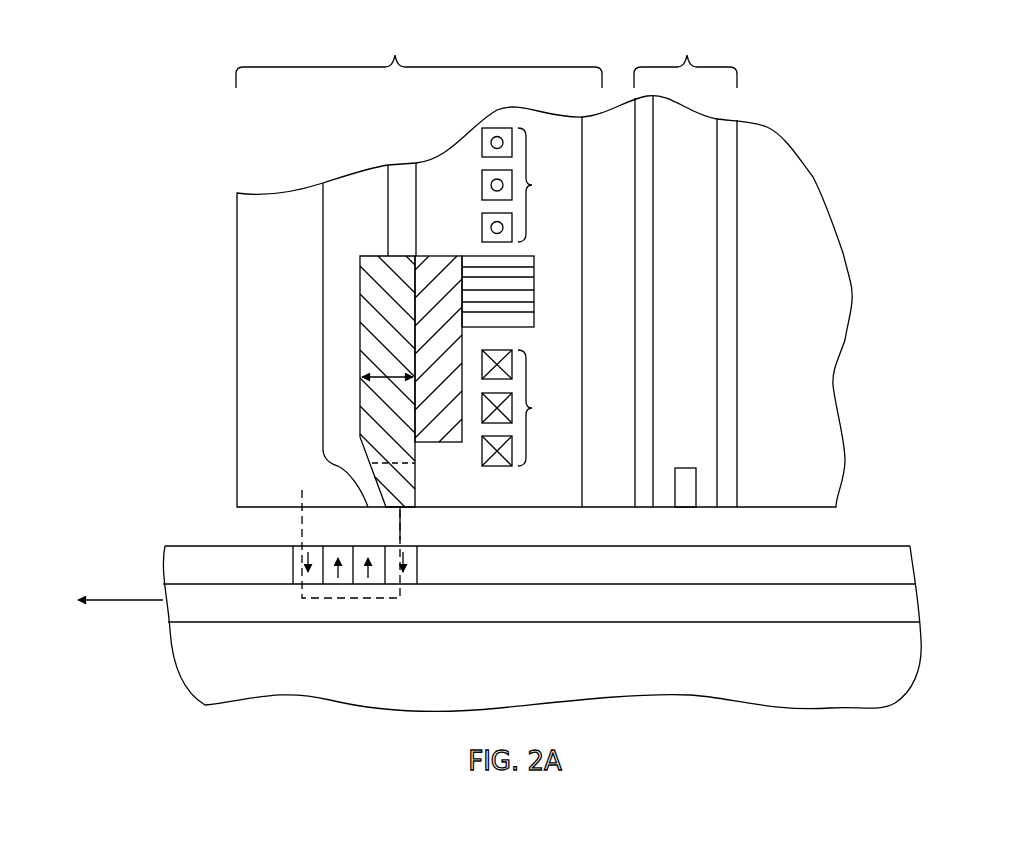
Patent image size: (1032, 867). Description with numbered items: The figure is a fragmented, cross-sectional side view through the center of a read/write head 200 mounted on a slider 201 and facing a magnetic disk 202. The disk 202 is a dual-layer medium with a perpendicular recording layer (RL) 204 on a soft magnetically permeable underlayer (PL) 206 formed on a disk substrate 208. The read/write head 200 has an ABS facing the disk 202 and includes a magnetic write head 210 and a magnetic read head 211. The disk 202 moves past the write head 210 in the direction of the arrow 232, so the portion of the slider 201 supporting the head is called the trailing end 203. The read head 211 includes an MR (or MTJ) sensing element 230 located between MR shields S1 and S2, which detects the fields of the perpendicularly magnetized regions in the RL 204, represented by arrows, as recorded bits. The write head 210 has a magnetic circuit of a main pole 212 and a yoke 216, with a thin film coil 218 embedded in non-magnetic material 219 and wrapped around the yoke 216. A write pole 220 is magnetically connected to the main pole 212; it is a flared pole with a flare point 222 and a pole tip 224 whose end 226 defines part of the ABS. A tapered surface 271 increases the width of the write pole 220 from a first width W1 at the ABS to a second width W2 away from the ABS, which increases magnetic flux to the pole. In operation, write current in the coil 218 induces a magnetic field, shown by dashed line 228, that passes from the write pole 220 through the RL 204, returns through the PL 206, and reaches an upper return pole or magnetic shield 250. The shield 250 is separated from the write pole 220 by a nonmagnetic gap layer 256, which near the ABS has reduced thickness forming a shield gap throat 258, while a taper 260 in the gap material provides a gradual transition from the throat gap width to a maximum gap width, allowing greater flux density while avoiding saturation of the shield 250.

The read/write head 200 is at (190, 148).
The slider 201 is at (825, 262).
The magnetic disk 202 is at (938, 645).
The trailing end 203 is at (190, 330).
The recording layer (RL) 204 is at (905, 566).
The underlayer (PL) 206 is at (910, 608).
The disk substrate 208 is at (905, 688).
The magnetic write head 210 is at (419, 140).
The magnetic read head 211 is at (685, 56).
The main pole 212 is at (445, 285).
The yoke 216 is at (535, 257).
The thin film coil 218 is at (533, 408).
The non-magnetic material 219 is at (432, 194).
The write pole 220 is at (384, 265).
The flare point 222 is at (398, 453).
The pole tip 224 is at (398, 490).
The end of write pole 226 is at (413, 516).
The magnetic field 228 is at (300, 527).
The MR sensing element 230 is at (686, 478).
The arrow indicating disk motion 232 is at (122, 598).
The upper return pole or magnetic shield 250 is at (276, 205).
The nonmagnetic gap layer 256 is at (328, 302).
The shield gap throat 258 is at (352, 484).
The taper 260 is at (328, 465).
The tapered surface 271 is at (362, 470).
The MR shield S1 is at (728, 332).
The MR shield S2 is at (645, 287).
The first width W1 is at (390, 520).
The second width W2 is at (382, 377).
The air bearing surface ABS is at (470, 509).